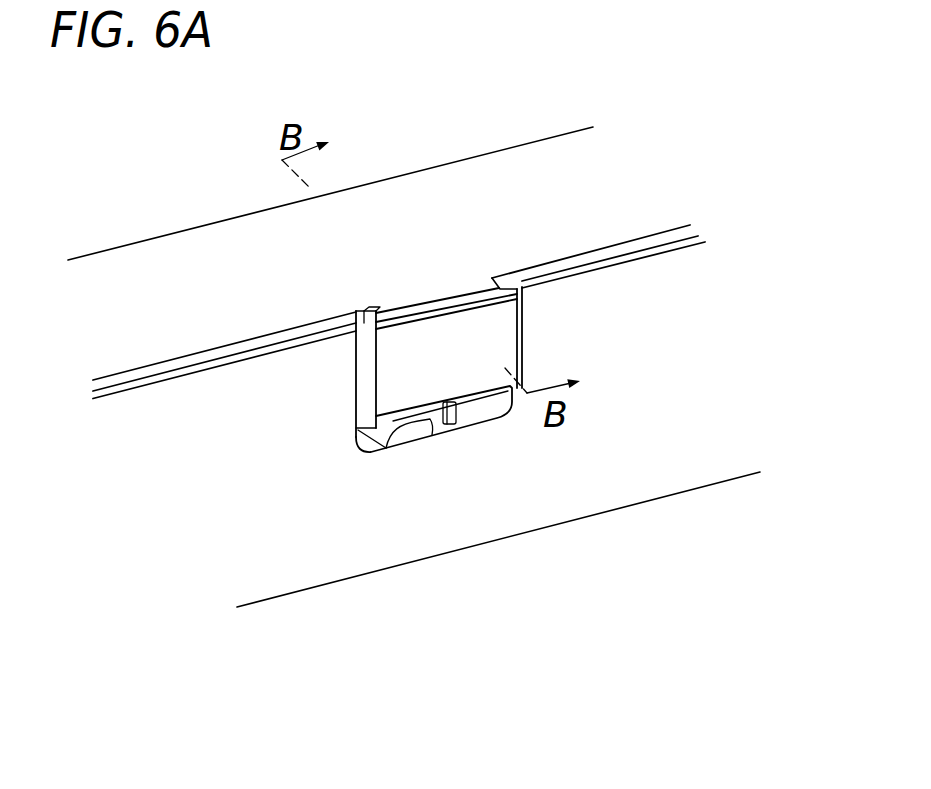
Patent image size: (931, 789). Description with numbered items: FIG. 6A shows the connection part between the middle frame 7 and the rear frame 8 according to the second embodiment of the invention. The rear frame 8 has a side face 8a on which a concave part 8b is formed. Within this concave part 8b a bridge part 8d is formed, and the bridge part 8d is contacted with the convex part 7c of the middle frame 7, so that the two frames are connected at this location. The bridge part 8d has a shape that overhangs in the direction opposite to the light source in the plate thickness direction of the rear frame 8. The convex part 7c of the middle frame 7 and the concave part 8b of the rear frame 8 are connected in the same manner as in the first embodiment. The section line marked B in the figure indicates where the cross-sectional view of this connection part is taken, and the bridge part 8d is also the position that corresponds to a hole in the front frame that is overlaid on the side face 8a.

The middle frame 7 is at (222, 258).
The convex part 7c is at (395, 428).
The rear frame 8 is at (712, 353).
The side face 8a is at (230, 504).
The concave part 8b is at (441, 421).
The bridge part 8d is at (505, 325).